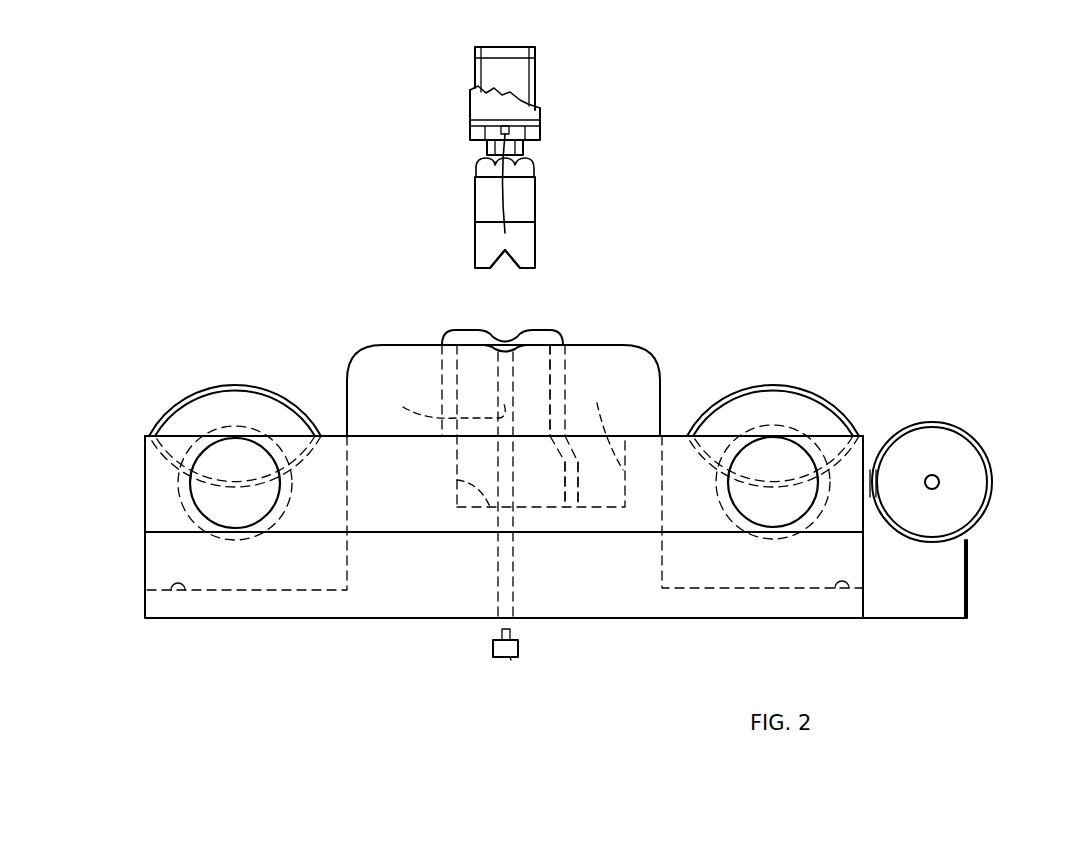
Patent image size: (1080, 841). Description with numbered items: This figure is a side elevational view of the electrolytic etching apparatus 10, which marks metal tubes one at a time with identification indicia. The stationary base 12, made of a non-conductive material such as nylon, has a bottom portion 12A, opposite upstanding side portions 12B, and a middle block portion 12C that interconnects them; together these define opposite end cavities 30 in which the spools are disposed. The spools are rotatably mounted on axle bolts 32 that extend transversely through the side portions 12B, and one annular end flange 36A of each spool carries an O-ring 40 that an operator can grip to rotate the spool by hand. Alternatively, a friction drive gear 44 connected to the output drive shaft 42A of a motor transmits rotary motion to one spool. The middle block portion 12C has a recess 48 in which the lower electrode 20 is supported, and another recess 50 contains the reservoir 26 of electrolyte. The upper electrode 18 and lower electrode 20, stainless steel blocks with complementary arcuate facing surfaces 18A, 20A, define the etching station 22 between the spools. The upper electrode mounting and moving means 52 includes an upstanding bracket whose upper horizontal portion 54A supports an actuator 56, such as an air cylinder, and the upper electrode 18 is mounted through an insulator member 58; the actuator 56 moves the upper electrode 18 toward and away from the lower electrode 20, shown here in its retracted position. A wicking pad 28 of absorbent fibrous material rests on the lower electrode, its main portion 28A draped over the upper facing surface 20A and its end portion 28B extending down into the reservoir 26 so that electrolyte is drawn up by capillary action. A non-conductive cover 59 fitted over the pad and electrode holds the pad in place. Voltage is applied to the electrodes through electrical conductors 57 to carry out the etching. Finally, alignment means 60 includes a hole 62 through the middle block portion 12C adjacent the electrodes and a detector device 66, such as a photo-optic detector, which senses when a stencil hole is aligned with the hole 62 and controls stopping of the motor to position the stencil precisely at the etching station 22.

The electrolytic etching apparatus 10 is at (644, 183).
The stationary base 12 is at (723, 621).
The bottom portion 12A is at (316, 615).
The side portions 12B is at (335, 433).
The block portion 12C is at (637, 357).
The upper electrode 18 is at (475, 242).
The lower facing surface 18A is at (508, 258).
The lower electrode 20 is at (533, 506).
The upper facing surface 20A is at (490, 327).
The etching station 22 is at (544, 285).
The reservoir 26 is at (625, 506).
The wicking pad 28 is at (597, 345).
The main portion 28A is at (537, 328).
The end portion 28B is at (590, 506).
The end cavities 30 is at (178, 598).
The axle bolts 32 is at (200, 490).
The annular end flange 36A is at (240, 410).
The O-ring 40 is at (202, 388).
The output drive shaft 42A is at (940, 479).
The friction drive gear 44 is at (977, 445).
The recess 48 is at (489, 512).
The recess 50 is at (606, 425).
The upper electrode mounting and moving means 52 is at (553, 138).
The upper horizontal portion 54A is at (505, 122).
The actuator 56 is at (536, 73).
The electrical conductors 57 is at (486, 145).
The insulator member 58 is at (475, 193).
The cover 59 is at (572, 367).
The alignment means 60 is at (481, 645).
The hole 62 is at (447, 400).
The detector device 66 is at (510, 657).